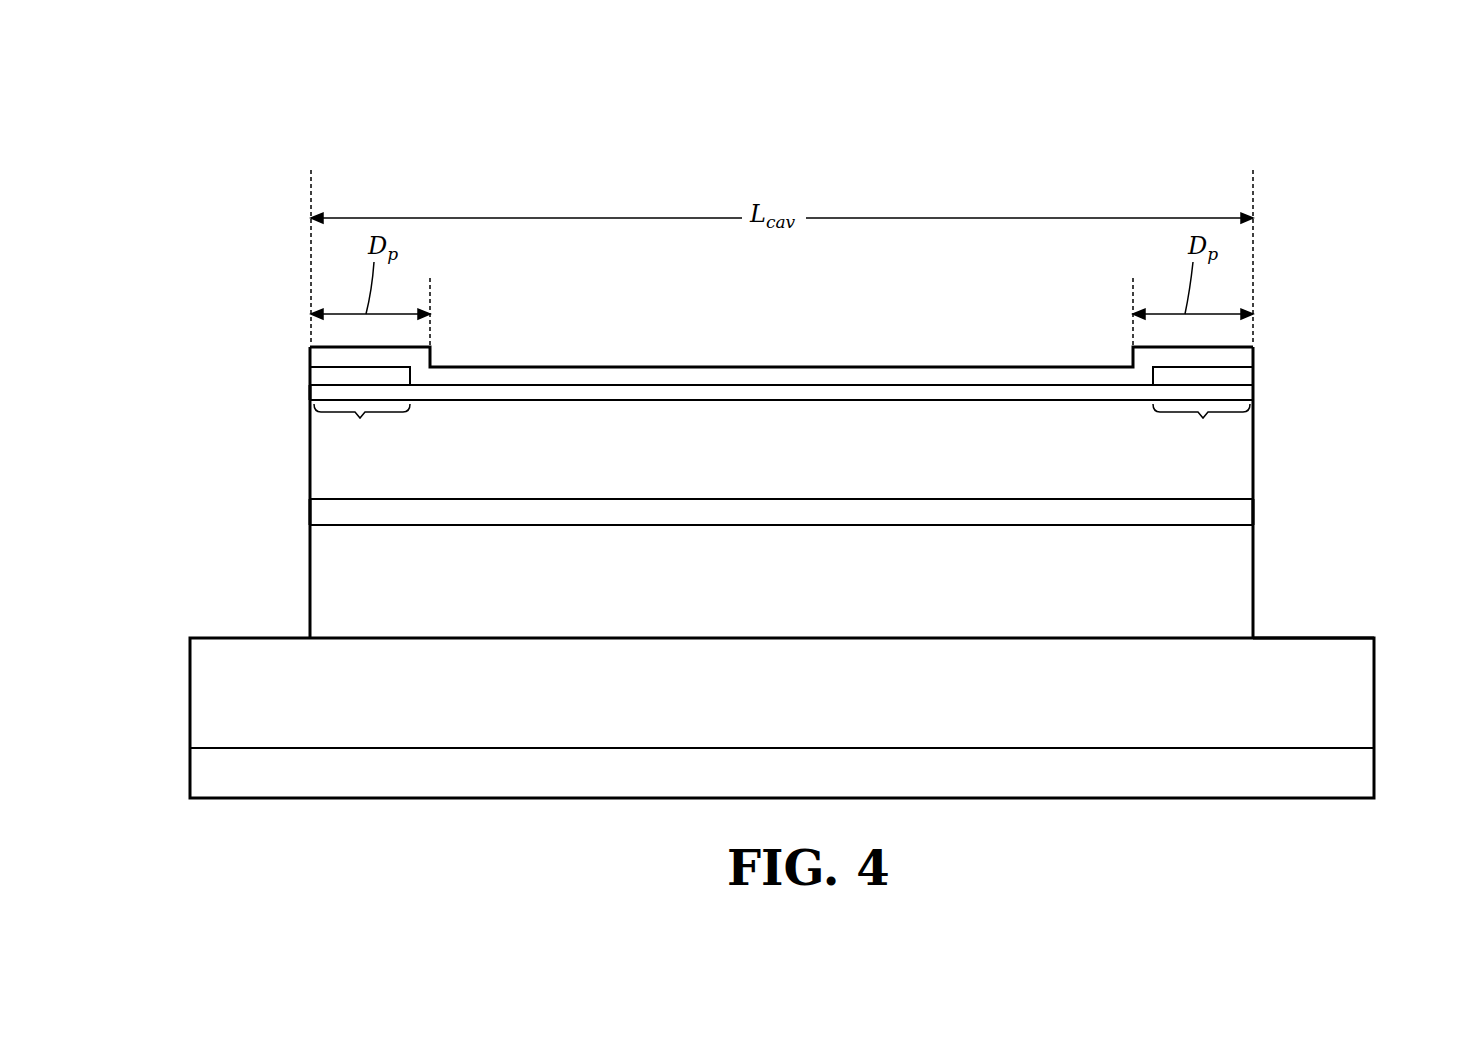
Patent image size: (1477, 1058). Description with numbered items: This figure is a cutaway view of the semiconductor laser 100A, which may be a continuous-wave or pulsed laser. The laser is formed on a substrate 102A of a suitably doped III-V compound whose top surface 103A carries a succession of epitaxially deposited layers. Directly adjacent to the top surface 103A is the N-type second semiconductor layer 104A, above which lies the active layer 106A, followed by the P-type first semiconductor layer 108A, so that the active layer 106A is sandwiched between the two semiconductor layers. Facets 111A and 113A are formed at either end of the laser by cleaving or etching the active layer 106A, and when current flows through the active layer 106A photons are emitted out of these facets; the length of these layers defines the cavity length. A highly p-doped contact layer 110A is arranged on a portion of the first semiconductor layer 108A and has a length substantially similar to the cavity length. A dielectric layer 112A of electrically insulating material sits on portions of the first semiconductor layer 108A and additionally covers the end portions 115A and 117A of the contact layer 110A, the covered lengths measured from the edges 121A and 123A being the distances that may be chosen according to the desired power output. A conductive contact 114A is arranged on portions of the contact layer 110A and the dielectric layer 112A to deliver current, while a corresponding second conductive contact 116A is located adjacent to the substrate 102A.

The semiconductor laser 100A is at (1316, 118).
The substrate 102A is at (202, 692).
The top surface 103A is at (1335, 635).
The second semiconductor layer 104A is at (322, 570).
The active layer 106A is at (322, 518).
The first semiconductor layer 108A is at (322, 473).
The contact layer 110A is at (1245, 397).
The facet 111A is at (1255, 512).
The dielectric layer 112A is at (323, 377).
The facet 113A is at (310, 512).
The conductive contact 114A is at (620, 378).
The end portion 115A is at (360, 418).
The second conductive contact 116A is at (332, 782).
The end portion 117A is at (1203, 418).
The edge 121A is at (312, 390).
The edge 123A is at (1242, 393).